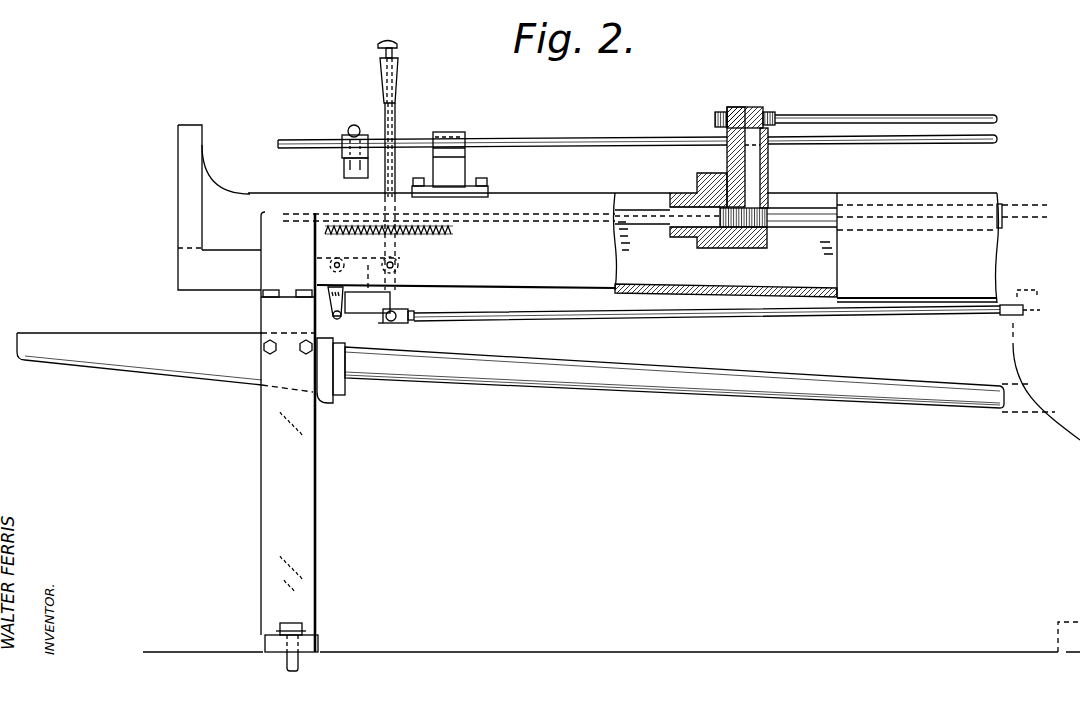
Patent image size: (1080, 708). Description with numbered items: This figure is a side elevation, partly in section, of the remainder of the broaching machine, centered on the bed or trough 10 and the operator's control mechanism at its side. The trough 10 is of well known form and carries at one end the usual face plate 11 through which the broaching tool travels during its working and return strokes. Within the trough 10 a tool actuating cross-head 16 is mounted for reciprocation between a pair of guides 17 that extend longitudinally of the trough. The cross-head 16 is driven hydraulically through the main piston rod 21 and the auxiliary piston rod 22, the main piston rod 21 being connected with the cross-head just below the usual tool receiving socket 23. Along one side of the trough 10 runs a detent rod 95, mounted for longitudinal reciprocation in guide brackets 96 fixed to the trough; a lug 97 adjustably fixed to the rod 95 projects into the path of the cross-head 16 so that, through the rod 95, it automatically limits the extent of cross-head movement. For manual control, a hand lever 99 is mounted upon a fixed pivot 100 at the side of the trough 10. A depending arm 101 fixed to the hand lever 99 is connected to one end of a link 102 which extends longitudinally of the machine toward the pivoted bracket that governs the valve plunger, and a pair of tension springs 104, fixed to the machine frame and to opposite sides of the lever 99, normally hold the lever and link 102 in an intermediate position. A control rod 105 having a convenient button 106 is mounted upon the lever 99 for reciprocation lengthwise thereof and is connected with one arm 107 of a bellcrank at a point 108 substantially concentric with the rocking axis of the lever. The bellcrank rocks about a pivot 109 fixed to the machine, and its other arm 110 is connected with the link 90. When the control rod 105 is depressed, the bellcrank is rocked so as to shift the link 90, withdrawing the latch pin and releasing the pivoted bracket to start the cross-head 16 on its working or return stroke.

The bed or trough 10 is at (708, 286).
The face plate 11 is at (178, 148).
The tool actuating cross-head 16 is at (727, 157).
The guides 17 is at (645, 214).
The main piston rod 21 is at (813, 229).
The auxiliary piston rod 22 is at (899, 114).
The tool receiving socket 23 is at (672, 193).
The link 90 is at (1022, 317).
The detent rod 95 is at (565, 138).
The guide brackets 96 is at (467, 163).
The lug 97 is at (342, 168).
The hand lever 99 is at (400, 76).
The fixed pivot 100 is at (399, 266).
The depending arm 101 is at (407, 304).
The link 102 is at (549, 320).
The tension springs 104 is at (389, 241).
The control rod 105 is at (416, 196).
The button 106 is at (406, 24).
The arm of bellcrank 107 is at (466, 299).
The connection point 108 is at (394, 261).
The pivot 109 is at (330, 264).
The other arm of bellcrank 110 is at (332, 302).